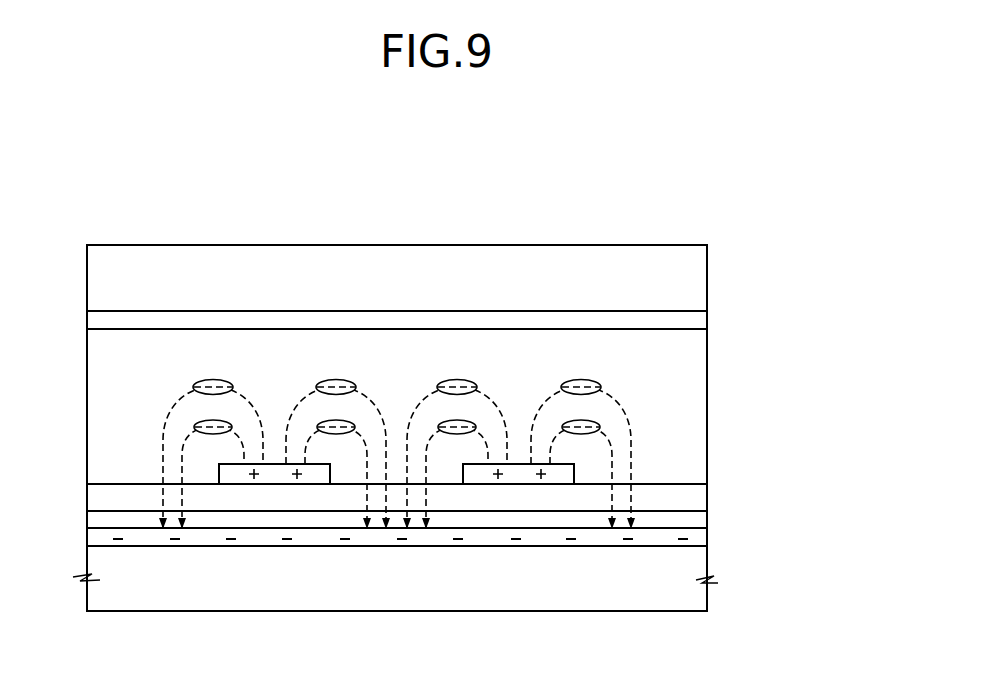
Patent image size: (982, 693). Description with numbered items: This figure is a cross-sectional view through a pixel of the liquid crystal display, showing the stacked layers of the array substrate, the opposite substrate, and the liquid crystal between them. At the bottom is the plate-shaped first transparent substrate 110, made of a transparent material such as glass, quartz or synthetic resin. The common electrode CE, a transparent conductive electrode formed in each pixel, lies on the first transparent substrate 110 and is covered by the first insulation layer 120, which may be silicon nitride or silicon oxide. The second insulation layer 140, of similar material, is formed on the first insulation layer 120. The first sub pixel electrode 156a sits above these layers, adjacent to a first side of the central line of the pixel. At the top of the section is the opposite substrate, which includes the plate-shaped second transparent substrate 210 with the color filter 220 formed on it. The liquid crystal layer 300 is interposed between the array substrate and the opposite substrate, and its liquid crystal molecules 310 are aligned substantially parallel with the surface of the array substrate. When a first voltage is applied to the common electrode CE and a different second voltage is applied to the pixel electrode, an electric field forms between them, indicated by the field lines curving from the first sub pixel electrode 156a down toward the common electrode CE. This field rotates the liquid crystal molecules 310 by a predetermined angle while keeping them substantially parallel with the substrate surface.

The second transparent substrate 210 is at (700, 278).
The color filter 220 is at (700, 323).
The liquid crystal molecules 310 is at (582, 383).
The liquid crystal layer 300 is at (677, 407).
The first sub pixel electrode 156a is at (563, 475).
The second insulation layer 140 is at (700, 495).
The first insulation layer 120 is at (700, 519).
The common electrode CE is at (700, 541).
The first transparent substrate 110 is at (700, 597).